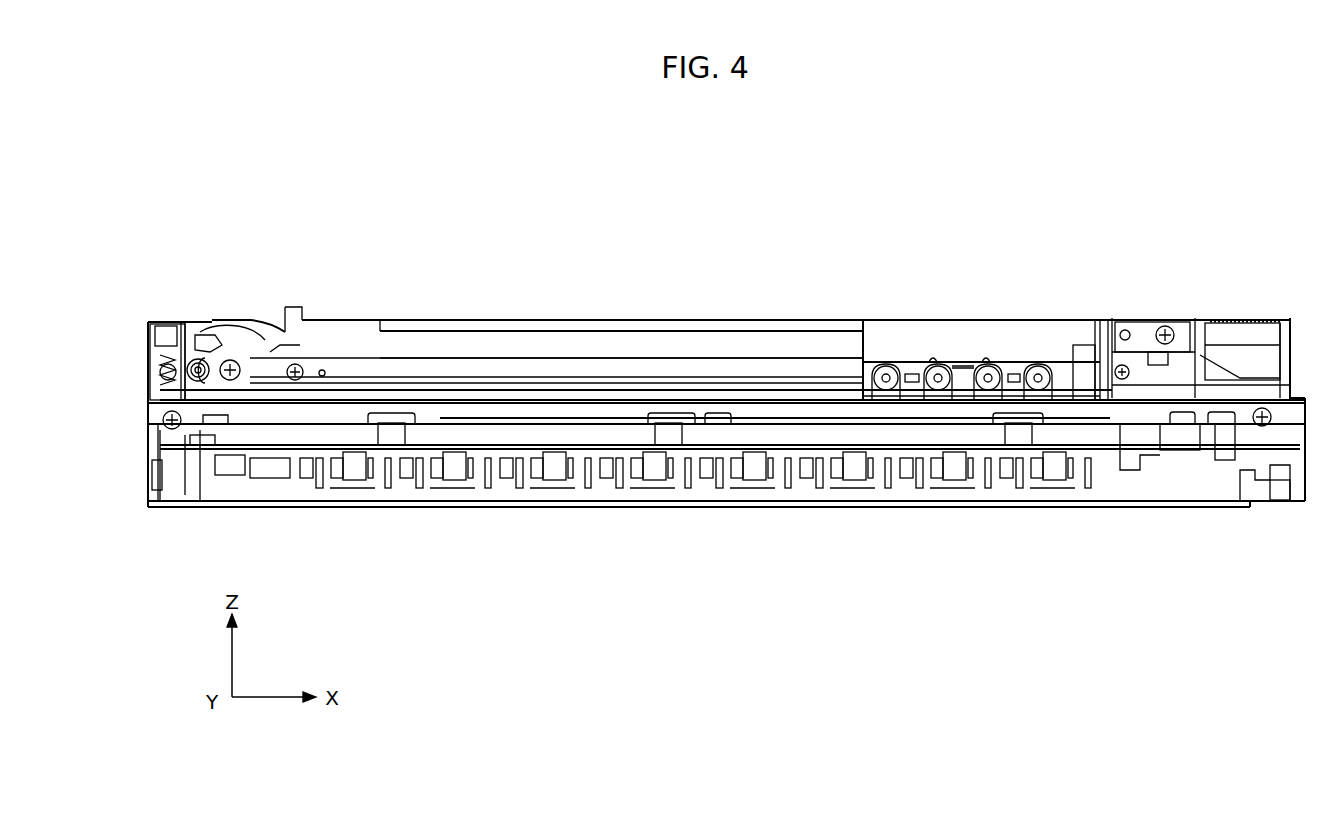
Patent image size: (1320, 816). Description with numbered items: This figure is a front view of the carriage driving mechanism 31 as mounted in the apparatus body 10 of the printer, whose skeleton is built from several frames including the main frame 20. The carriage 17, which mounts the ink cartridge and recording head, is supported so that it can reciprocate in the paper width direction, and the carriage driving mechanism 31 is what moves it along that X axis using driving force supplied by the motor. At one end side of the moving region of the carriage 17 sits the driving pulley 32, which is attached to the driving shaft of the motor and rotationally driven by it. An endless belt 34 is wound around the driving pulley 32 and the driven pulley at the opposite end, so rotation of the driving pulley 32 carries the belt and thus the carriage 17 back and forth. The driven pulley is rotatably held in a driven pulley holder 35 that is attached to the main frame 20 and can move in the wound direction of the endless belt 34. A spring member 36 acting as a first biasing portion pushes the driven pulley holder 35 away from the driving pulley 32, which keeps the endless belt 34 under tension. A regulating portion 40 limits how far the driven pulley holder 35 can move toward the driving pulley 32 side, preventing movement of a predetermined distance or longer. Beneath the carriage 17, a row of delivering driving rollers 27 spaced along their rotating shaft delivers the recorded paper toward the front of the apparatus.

The apparatus body 10 is at (590, 197).
The carriage 17 is at (990, 330).
The main frame 20 is at (250, 330).
The delivering driving roller 27 is at (760, 470).
The carriage driving mechanism 31 is at (658, 342).
The driving pulley 32 is at (196, 330).
The endless belt 34 is at (425, 350).
The driven pulley holder 35 is at (1258, 345).
The spring member 36 is at (1225, 320).
The regulating portion 40 is at (1135, 327).